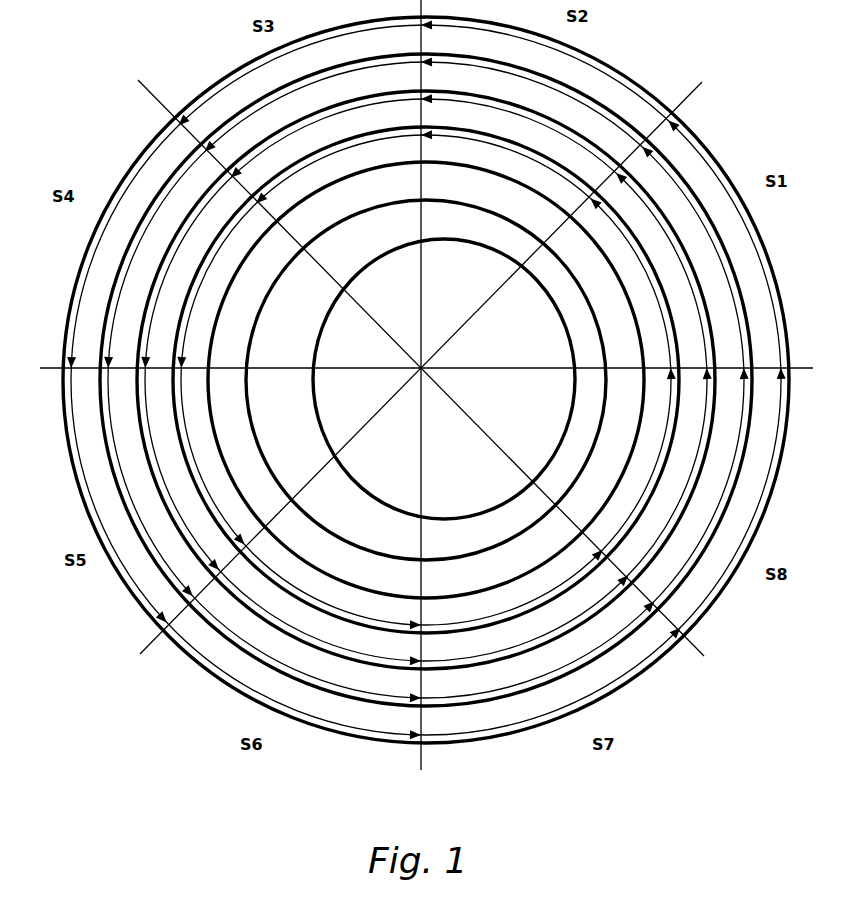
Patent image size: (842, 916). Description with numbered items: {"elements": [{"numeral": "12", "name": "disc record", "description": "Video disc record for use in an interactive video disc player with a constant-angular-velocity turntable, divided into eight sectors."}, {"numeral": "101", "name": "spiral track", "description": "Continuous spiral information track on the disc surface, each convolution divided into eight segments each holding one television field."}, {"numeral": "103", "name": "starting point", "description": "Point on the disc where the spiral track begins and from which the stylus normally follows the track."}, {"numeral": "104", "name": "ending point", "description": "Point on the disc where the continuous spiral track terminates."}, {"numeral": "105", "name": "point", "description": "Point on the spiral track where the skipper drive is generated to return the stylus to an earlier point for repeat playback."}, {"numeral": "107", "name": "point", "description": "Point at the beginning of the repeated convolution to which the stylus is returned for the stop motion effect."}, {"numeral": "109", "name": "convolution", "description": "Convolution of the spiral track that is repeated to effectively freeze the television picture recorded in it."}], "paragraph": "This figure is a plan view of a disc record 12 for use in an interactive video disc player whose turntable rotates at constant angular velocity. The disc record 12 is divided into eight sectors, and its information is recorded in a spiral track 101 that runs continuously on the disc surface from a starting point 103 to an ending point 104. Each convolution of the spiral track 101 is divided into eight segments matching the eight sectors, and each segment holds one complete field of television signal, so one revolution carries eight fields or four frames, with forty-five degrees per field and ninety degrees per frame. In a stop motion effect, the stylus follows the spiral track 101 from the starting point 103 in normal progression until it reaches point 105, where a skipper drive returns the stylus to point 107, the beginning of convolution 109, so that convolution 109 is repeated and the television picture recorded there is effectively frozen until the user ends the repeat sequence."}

The disk 12 is at (426, 385).
The outer track 101 is at (612, 62).
The sector boundary line 103 is at (166, 98).
The inner region 104 is at (345, 446).
The track band 105 is at (120, 380).
The scan track 107 is at (110, 392).
The scan track 109 is at (168, 558).